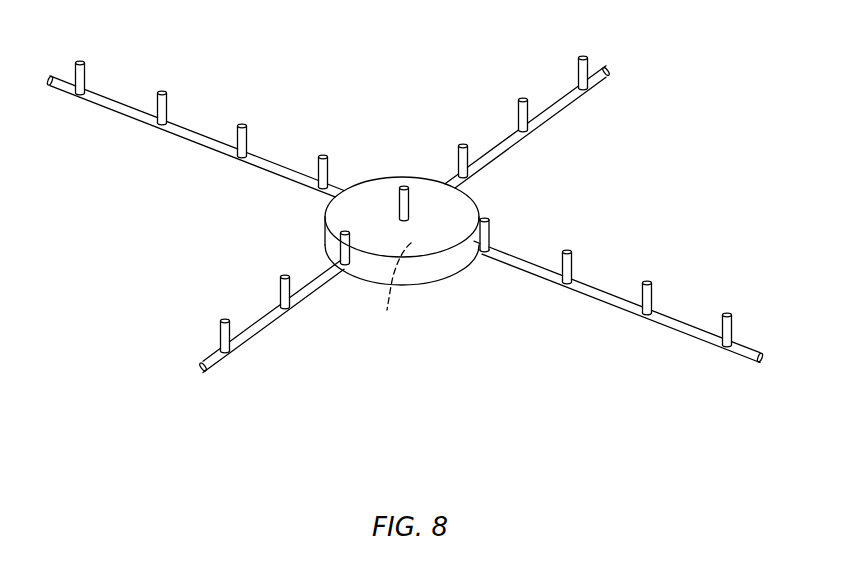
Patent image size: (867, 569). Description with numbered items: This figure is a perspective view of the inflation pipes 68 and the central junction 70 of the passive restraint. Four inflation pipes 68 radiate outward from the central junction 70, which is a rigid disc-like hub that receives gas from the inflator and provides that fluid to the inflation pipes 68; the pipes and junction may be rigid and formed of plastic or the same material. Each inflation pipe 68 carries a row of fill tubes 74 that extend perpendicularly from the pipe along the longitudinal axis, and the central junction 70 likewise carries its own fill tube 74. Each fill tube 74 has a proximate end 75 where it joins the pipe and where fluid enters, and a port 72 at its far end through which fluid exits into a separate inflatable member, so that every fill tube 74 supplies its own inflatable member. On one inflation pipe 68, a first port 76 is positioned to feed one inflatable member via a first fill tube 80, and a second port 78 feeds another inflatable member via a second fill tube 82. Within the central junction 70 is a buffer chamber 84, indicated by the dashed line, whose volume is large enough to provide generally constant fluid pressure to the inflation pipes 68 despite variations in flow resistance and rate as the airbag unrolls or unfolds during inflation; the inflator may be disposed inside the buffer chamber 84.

The inflation pipe 68 is at (176, 138).
The central junction 70 is at (427, 280).
The port 72 is at (400, 181).
The fill tube 74 is at (429, 179).
The proximate end 75 is at (72, 88).
The first port 76 is at (646, 281).
The second port 78 is at (726, 313).
The first fill tube 80 is at (653, 300).
The second fill tube 82 is at (735, 333).
The buffer chamber 84 is at (391, 286).